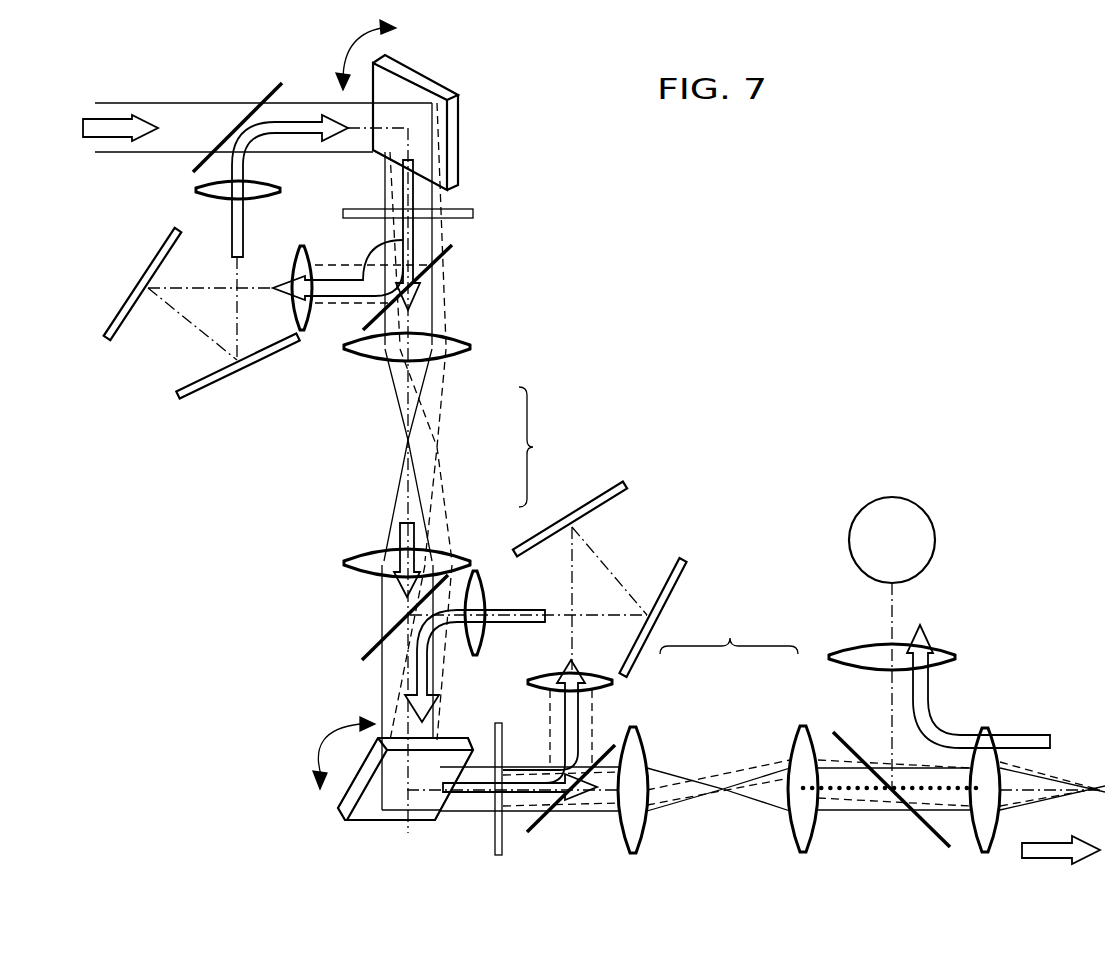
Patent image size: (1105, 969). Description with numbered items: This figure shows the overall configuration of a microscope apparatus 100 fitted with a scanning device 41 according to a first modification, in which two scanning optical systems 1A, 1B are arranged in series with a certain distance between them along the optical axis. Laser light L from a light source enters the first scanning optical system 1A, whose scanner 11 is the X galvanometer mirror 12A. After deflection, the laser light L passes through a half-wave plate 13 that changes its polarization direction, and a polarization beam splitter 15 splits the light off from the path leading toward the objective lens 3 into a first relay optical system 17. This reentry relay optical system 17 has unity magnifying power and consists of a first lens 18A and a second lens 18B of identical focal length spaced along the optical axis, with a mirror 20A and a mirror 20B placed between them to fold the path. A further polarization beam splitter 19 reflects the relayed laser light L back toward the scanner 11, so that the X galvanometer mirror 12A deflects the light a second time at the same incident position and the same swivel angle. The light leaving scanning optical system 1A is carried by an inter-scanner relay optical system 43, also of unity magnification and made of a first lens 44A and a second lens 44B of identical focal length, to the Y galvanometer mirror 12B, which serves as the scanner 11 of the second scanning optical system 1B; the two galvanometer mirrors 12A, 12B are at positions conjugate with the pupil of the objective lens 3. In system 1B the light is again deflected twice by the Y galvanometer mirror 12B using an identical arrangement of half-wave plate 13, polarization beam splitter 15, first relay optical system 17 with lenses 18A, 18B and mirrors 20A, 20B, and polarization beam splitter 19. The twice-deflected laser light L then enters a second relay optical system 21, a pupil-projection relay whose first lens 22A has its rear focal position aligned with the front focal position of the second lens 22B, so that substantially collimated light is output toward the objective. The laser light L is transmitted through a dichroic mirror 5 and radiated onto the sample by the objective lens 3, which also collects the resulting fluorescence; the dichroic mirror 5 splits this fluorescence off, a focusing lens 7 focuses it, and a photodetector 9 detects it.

The laser light L is at (186, 102).
The microscope apparatus 100 is at (962, 222).
The scanner 11 is at (468, 72).
The X galvanometer mirror 12A is at (450, 118).
The Y galvanometer mirror 12B is at (352, 798).
The half-wave plate 13 is at (475, 213).
The polarization beam splitter 15 is at (440, 262).
The first relay optical system 17 is at (133, 378).
The first lens 18A is at (310, 322).
The second lens 18B is at (200, 190).
The polarization beam splitter 19 is at (256, 100).
The mirror 20A is at (125, 307).
The mirror 20B is at (203, 390).
The scanning optical system 1A is at (148, 452).
The scanning optical system 1B is at (772, 452).
The scanning device 41 is at (93, 641).
The relay optical system 43 is at (542, 447).
The first lens 44A is at (462, 358).
The second lens 44B is at (462, 548).
The second relay optical system 21 is at (729, 628).
The first lens 22A is at (632, 727).
The second lens 22B is at (802, 725).
The dichroic mirror 5 is at (933, 833).
The focusing lens 7 is at (837, 647).
The photodetector 9 is at (937, 538).
The objective lens 3 is at (985, 728).